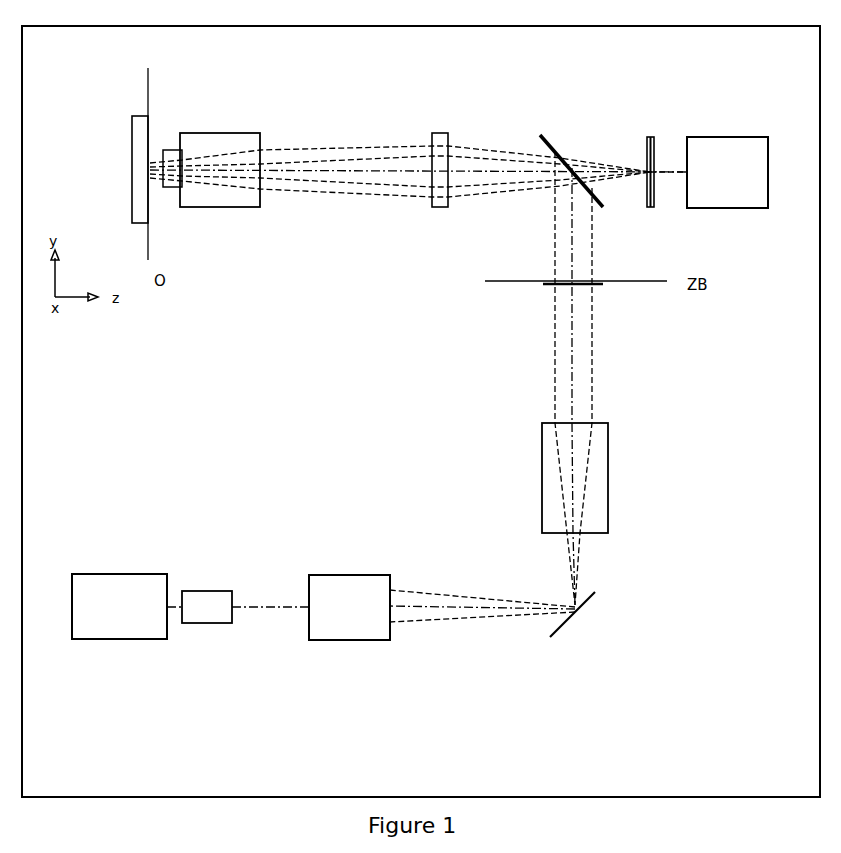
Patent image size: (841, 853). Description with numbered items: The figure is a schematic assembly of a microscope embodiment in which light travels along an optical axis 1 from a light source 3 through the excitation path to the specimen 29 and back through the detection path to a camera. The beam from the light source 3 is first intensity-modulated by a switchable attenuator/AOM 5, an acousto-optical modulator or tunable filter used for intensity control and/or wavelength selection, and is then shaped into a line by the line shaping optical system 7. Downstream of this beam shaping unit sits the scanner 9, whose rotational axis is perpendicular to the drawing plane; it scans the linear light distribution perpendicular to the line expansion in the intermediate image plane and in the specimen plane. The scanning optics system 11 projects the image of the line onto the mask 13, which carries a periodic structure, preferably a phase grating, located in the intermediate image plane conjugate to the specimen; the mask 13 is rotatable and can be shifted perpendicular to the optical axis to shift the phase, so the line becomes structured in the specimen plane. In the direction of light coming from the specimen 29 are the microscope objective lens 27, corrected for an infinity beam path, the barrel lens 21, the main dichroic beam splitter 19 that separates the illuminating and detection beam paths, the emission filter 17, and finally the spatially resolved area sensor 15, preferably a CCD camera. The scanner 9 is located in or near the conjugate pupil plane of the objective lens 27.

The optical axis 1 is at (246, 607).
The light source 3 is at (135, 607).
The switchable attenuator/AOM 5 is at (202, 623).
The line shaping optical system 7 is at (330, 615).
The scanner 9 is at (580, 615).
The scanning optics system 11 is at (608, 425).
The mask 13 is at (533, 290).
The spatially resolved area sensor 15 is at (698, 155).
The emission filter 17 is at (650, 137).
The main dichroic beam splitter 19 is at (558, 150).
The barrel lens 21 is at (440, 150).
The microscope objective lens 27 is at (184, 178).
The specimen 29 is at (140, 128).